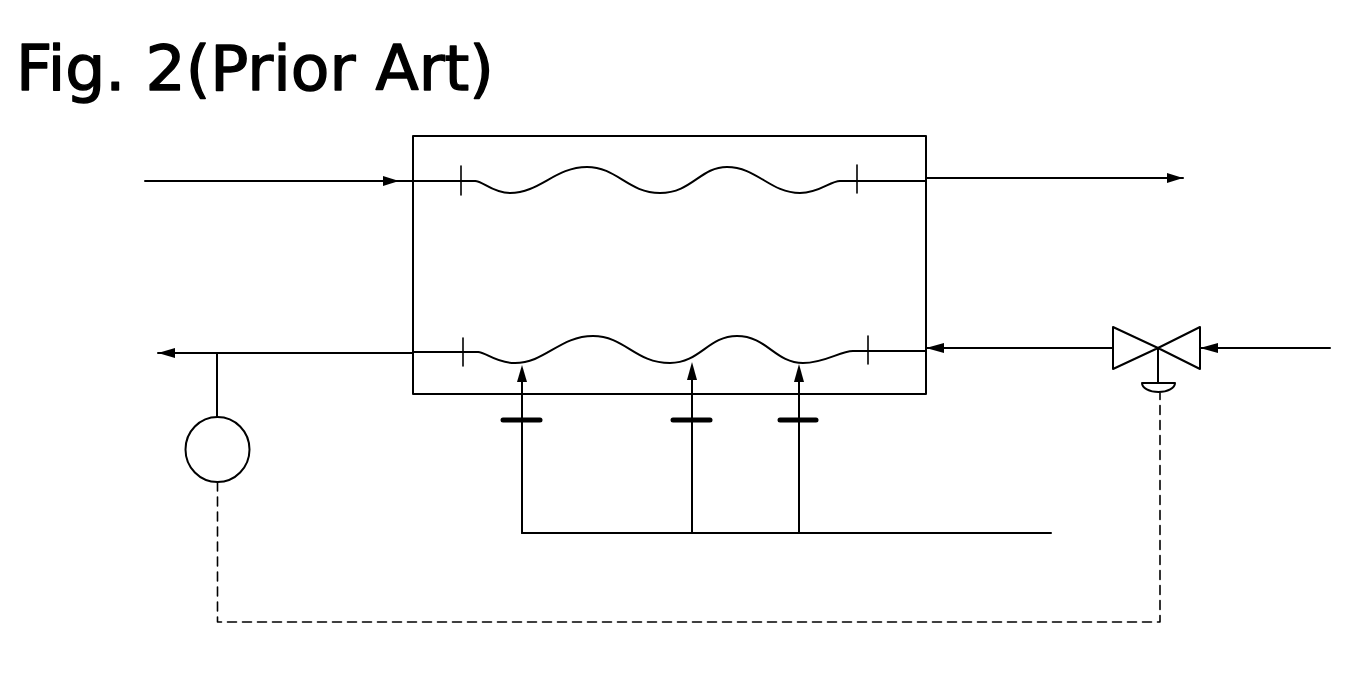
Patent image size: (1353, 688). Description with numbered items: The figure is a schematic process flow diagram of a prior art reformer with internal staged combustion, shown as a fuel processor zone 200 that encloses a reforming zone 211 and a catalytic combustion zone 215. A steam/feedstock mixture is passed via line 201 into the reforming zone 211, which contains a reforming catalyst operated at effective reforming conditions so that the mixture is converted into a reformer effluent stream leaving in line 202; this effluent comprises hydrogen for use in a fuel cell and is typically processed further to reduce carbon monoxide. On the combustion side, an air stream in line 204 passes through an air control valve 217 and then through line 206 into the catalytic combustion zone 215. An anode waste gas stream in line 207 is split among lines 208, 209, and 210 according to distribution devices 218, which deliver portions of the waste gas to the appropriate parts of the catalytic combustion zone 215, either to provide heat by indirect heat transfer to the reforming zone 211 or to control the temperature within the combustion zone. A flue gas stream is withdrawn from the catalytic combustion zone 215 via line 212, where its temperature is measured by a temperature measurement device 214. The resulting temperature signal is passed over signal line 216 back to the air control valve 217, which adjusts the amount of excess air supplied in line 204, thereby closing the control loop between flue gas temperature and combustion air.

The fuel processor zone 200 is at (754, 126).
The line 201 is at (264, 181).
The line 202 is at (1091, 178).
The line 204 is at (1227, 352).
The line 206 is at (995, 347).
The line 207 is at (935, 531).
The line 208 is at (800, 508).
The line 209 is at (690, 516).
The line 210 is at (521, 516).
The reforming zone 211 is at (696, 179).
The line 212 is at (347, 352).
The temperature measurement device 214 is at (243, 425).
The catalytic combustion zone 215 is at (714, 337).
The signal line 216 is at (848, 621).
The air control valve 217 is at (1167, 393).
The distribution devices 218 is at (778, 416).